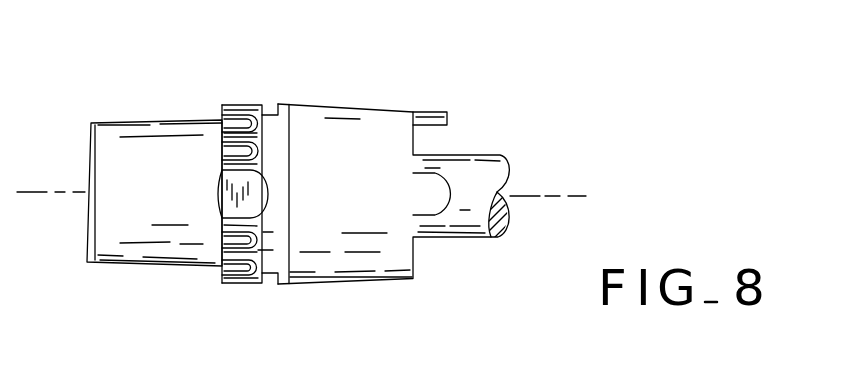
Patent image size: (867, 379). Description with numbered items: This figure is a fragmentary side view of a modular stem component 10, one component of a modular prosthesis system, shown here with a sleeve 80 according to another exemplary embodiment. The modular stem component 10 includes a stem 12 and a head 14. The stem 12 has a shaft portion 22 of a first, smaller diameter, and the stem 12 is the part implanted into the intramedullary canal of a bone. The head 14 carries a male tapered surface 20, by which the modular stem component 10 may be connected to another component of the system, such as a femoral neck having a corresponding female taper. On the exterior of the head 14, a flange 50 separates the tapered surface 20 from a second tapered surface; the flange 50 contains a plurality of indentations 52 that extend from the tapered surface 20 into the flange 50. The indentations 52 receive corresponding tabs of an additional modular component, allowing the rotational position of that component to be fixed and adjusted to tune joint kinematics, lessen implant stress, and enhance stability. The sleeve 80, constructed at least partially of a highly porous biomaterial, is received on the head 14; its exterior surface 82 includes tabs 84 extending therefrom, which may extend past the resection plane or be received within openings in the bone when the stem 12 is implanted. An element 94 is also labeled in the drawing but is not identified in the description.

The modular stem component 10 is at (625, 75).
The stem 12 is at (500, 97).
The head 14 is at (123, 93).
The tapered surface 20 is at (165, 258).
The shaft portion 22 is at (472, 222).
The flange 50 is at (252, 96).
The indentations 52 is at (235, 258).
The sleeve 80 is at (368, 83).
The exterior surface 82 is at (347, 232).
The tabs 84 is at (432, 197).
The flange 94 is at (433, 113).